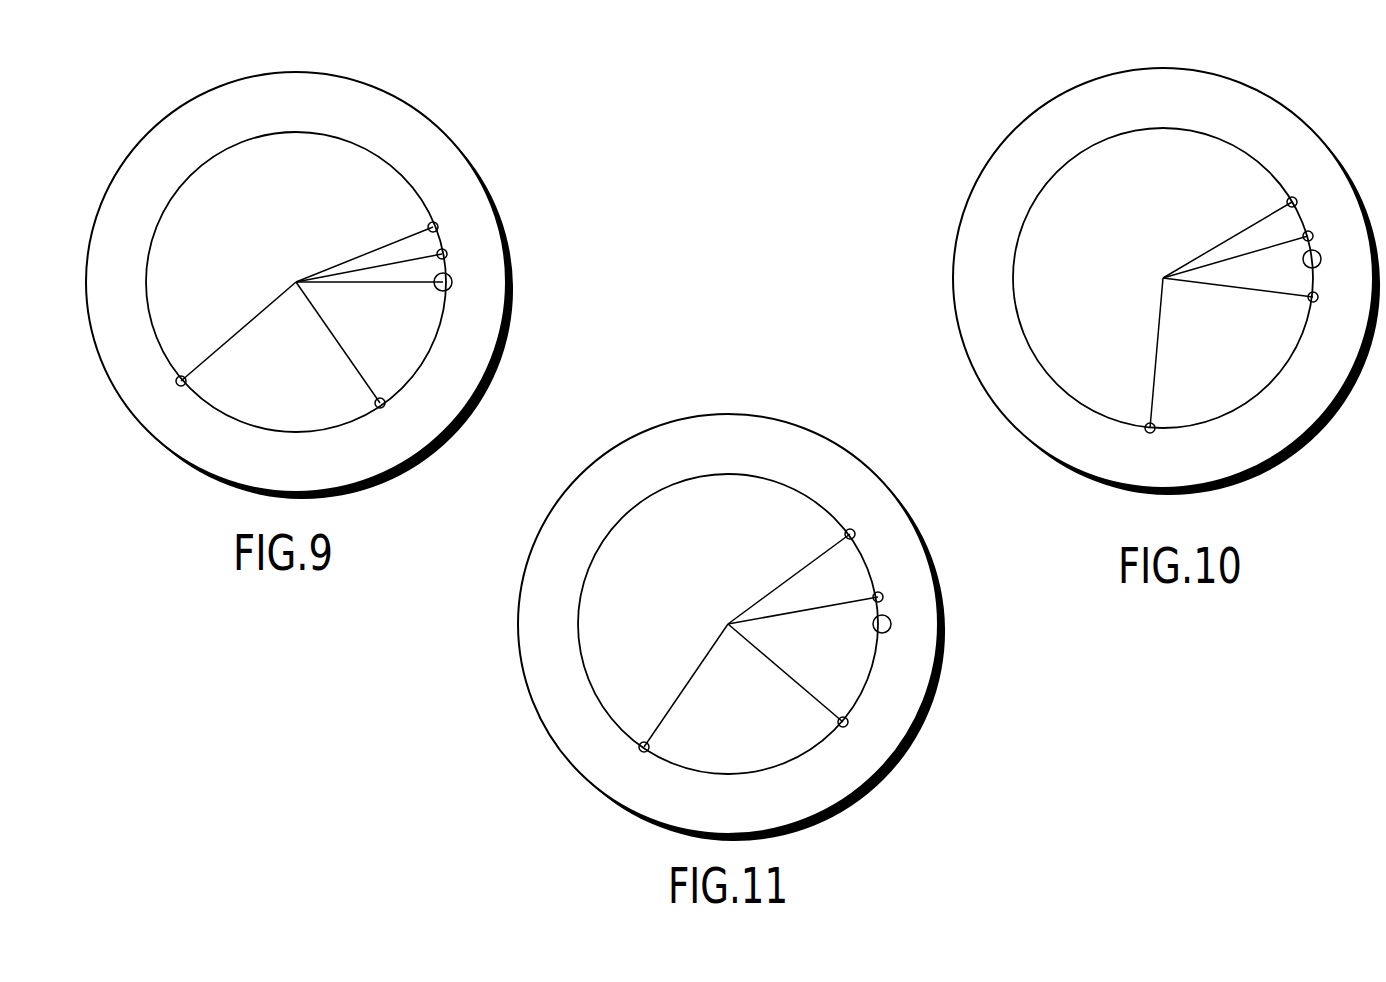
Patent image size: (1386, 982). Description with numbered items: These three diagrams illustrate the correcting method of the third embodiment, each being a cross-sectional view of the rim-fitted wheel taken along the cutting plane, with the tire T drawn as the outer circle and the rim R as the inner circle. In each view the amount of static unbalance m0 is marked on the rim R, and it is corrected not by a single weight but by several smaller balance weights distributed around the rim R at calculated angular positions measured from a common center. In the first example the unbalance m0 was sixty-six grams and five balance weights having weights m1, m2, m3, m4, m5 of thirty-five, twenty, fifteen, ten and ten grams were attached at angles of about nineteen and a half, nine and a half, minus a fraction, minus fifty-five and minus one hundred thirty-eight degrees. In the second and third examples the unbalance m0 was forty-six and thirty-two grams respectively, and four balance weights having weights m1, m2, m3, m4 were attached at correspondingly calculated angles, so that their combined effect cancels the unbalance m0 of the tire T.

In FIG. 9, the tire T is at (202, 117).
In FIG. 10, the tire T is at (1072, 113).
In FIG. 11, the tire T is at (636, 457).
In FIG. 9, the rim R is at (185, 223).
In FIG. 10, the rim R is at (1056, 204).
In FIG. 11, the rim R is at (620, 567).
In FIG. 9, the amount of static unbalance m0 is at (466, 280).
In FIG. 10, the amount of static unbalance m0 is at (1334, 259).
In FIG. 11, the amount of static unbalance m0 is at (904, 624).
In FIG. 9, the weight of first balance weight m1 is at (381, 235).
In FIG. 10, the weight of first balance weight m1 is at (1245, 223).
In FIG. 11, the weight of first balance weight m1 is at (815, 568).
In FIG. 9, the weight of second balance weight m2 is at (390, 256).
In FIG. 10, the weight of second balance weight m2 is at (1256, 242).
In FIG. 11, the weight of second balance weight m2 is at (824, 595).
In FIG. 9, the weight of third balance weight m3 is at (393, 304).
In FIG. 10, the weight of third balance weight m3 is at (1260, 303).
In FIG. 11, the weight of third balance weight m3 is at (812, 688).
In FIG. 9, the weight of fourth balance weight m4 is at (360, 362).
In FIG. 10, the weight of fourth balance weight m4 is at (1162, 378).
In FIG. 11, the weight of fourth balance weight m4 is at (674, 708).
In FIG. 9, the weight of fifth balance weight m5 is at (219, 351).